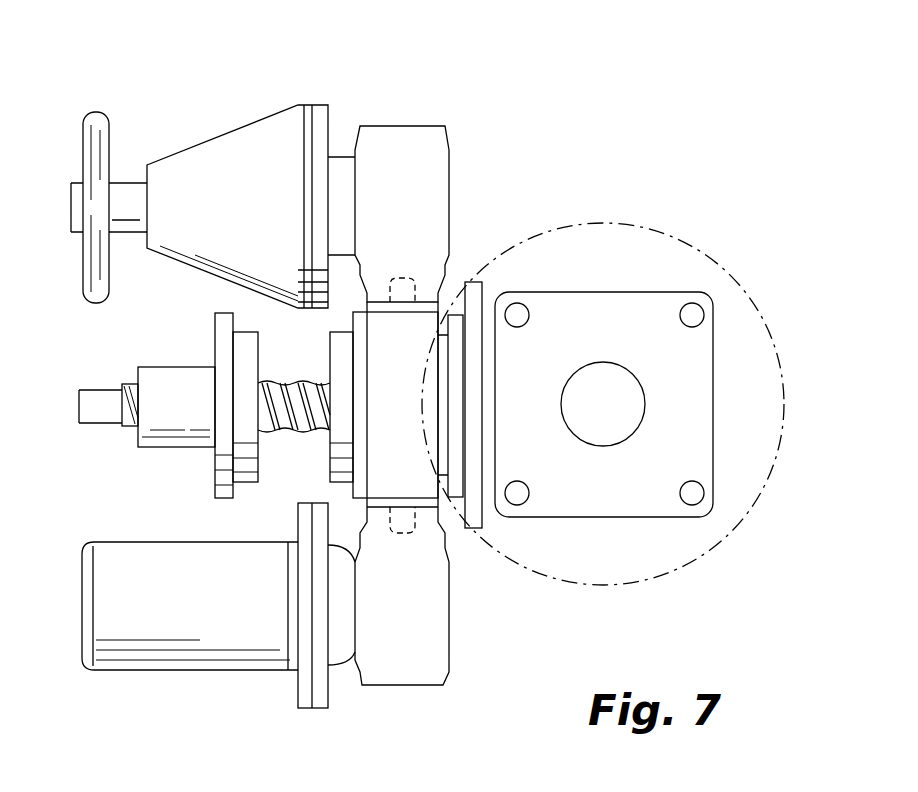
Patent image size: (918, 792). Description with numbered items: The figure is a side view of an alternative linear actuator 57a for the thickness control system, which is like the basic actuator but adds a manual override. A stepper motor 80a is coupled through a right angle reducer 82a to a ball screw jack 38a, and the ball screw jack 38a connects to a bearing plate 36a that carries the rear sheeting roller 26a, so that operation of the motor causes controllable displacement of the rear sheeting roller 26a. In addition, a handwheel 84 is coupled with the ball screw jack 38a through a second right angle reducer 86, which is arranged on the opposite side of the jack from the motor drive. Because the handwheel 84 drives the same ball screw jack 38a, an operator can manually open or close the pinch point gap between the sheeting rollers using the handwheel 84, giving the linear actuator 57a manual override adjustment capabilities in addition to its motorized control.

The handwheel 84 is at (225, 146).
The second right angle reducer 86 is at (437, 169).
The rear sheeting roller 26a is at (696, 242).
The ball screw jack 38a is at (418, 353).
The bearing plate 36a is at (670, 443).
The linear actuator 57a is at (86, 518).
The stepper motor 80a is at (143, 657).
The right angle reducer 82a is at (433, 613).